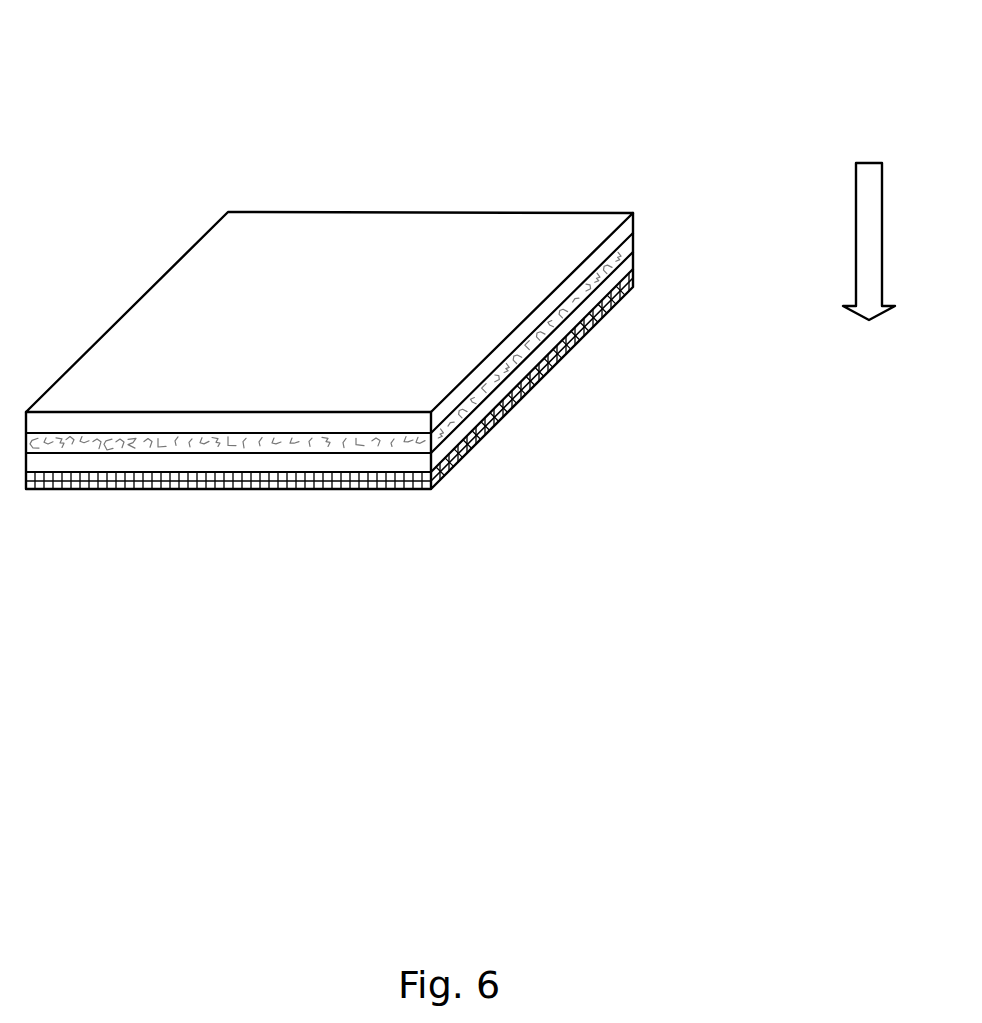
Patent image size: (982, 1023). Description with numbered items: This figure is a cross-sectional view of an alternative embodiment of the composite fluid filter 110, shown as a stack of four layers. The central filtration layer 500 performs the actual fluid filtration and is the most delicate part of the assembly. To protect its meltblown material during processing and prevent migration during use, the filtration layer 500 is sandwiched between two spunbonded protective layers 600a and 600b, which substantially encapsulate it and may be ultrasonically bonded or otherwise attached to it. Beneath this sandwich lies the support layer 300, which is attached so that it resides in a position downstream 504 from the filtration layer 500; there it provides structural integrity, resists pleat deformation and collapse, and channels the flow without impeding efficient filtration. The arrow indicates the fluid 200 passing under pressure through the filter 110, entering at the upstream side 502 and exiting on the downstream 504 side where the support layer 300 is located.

The fluid filter 110 is at (383, 268).
The protective layer 600b is at (631, 215).
The filtration layer 500 is at (631, 240).
The protective layer 600a is at (631, 258).
The support layer 300 is at (631, 277).
The fluid 200 is at (870, 239).
The first side of core 502 is at (863, 172).
The downstream 504 is at (864, 313).